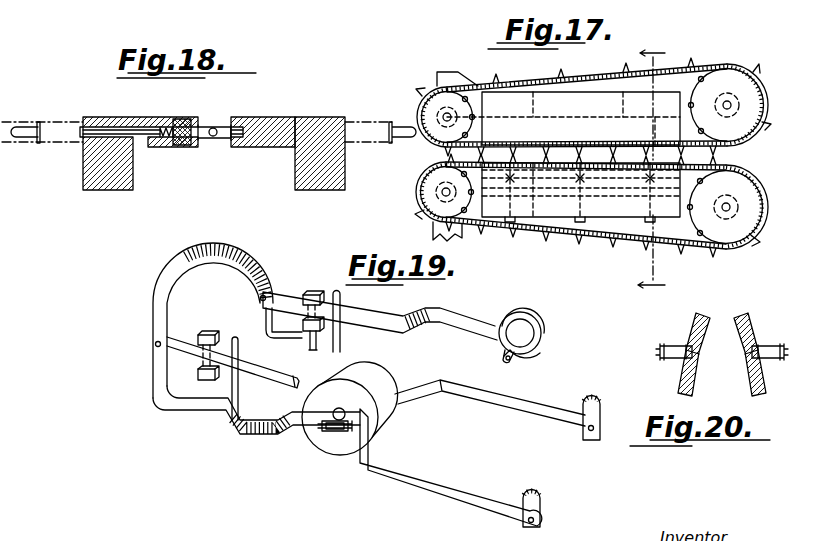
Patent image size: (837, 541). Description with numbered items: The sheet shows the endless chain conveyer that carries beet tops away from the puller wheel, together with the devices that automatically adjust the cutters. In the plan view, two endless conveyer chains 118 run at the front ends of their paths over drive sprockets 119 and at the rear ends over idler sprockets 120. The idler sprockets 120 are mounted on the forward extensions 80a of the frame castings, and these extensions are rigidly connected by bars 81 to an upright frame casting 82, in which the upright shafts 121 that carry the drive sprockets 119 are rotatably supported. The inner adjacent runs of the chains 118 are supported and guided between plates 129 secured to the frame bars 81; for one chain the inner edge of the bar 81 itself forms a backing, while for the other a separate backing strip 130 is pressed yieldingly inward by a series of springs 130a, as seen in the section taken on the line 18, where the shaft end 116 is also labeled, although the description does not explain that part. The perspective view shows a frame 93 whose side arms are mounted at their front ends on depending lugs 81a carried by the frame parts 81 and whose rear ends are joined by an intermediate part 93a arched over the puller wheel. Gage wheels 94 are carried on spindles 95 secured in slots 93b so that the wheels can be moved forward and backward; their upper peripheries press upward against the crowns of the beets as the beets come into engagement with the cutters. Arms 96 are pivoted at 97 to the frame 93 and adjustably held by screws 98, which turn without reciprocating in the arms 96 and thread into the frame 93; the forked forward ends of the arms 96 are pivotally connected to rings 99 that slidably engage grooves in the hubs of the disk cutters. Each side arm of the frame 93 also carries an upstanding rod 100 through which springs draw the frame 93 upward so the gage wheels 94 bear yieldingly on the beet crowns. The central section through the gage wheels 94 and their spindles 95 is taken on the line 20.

In FIG. 17, the section line 18 is at (650, 170).
In FIG. 19, the section line 20 is at (373, 390).
In FIG. 17, the forward extension 80a is at (410, 229).
In FIG. 18, the bar 81 is at (143, 144).
In FIG. 17, the bar 81 is at (573, 92).
In FIG. 19, the depending lug 81a is at (599, 413).
In FIG. 17, the upright frame casting 82 is at (690, 92).
In FIG. 19, the frame 93 is at (453, 480).
In FIG. 20, the frame 93 is at (680, 343).
In FIG. 19, the intermediate part 93a is at (178, 280).
In FIG. 19, the slot 93b is at (344, 433).
In FIG. 19, the gage wheel 94 is at (386, 419).
In FIG. 20, the gage wheel 94 is at (735, 377).
In FIG. 19, the spindle 95 is at (322, 426).
In FIG. 20, the spindle 95 is at (677, 361).
In FIG. 19, the arm 96 is at (357, 323).
In FIG. 19, the pivot 97 is at (261, 297).
In FIG. 19, the screw 98 is at (303, 322).
In FIG. 19, the ring 99 is at (542, 331).
In FIG. 19, the upstanding rod 100 is at (341, 333).
In FIG. 18, the shaft end 116 is at (33, 139).
In FIG. 18, the endless conveyer chain 118 is at (222, 128).
In FIG. 17, the endless conveyer chain 118 is at (600, 229).
In FIG. 17, the drive sprocket 119 is at (735, 75).
In FIG. 17, the idler sprocket 120 is at (425, 113).
In FIG. 17, the upright shaft 121 is at (729, 108).
In FIG. 18, the plate 129 is at (159, 121).
In FIG. 17, the plate 129 is at (590, 133).
In FIG. 18, the backing strip 130 is at (184, 125).
In FIG. 17, the backing strip 130 is at (632, 167).
In FIG. 18, the spring 130a is at (166, 122).
In FIG. 17, the spring 130a is at (632, 104).